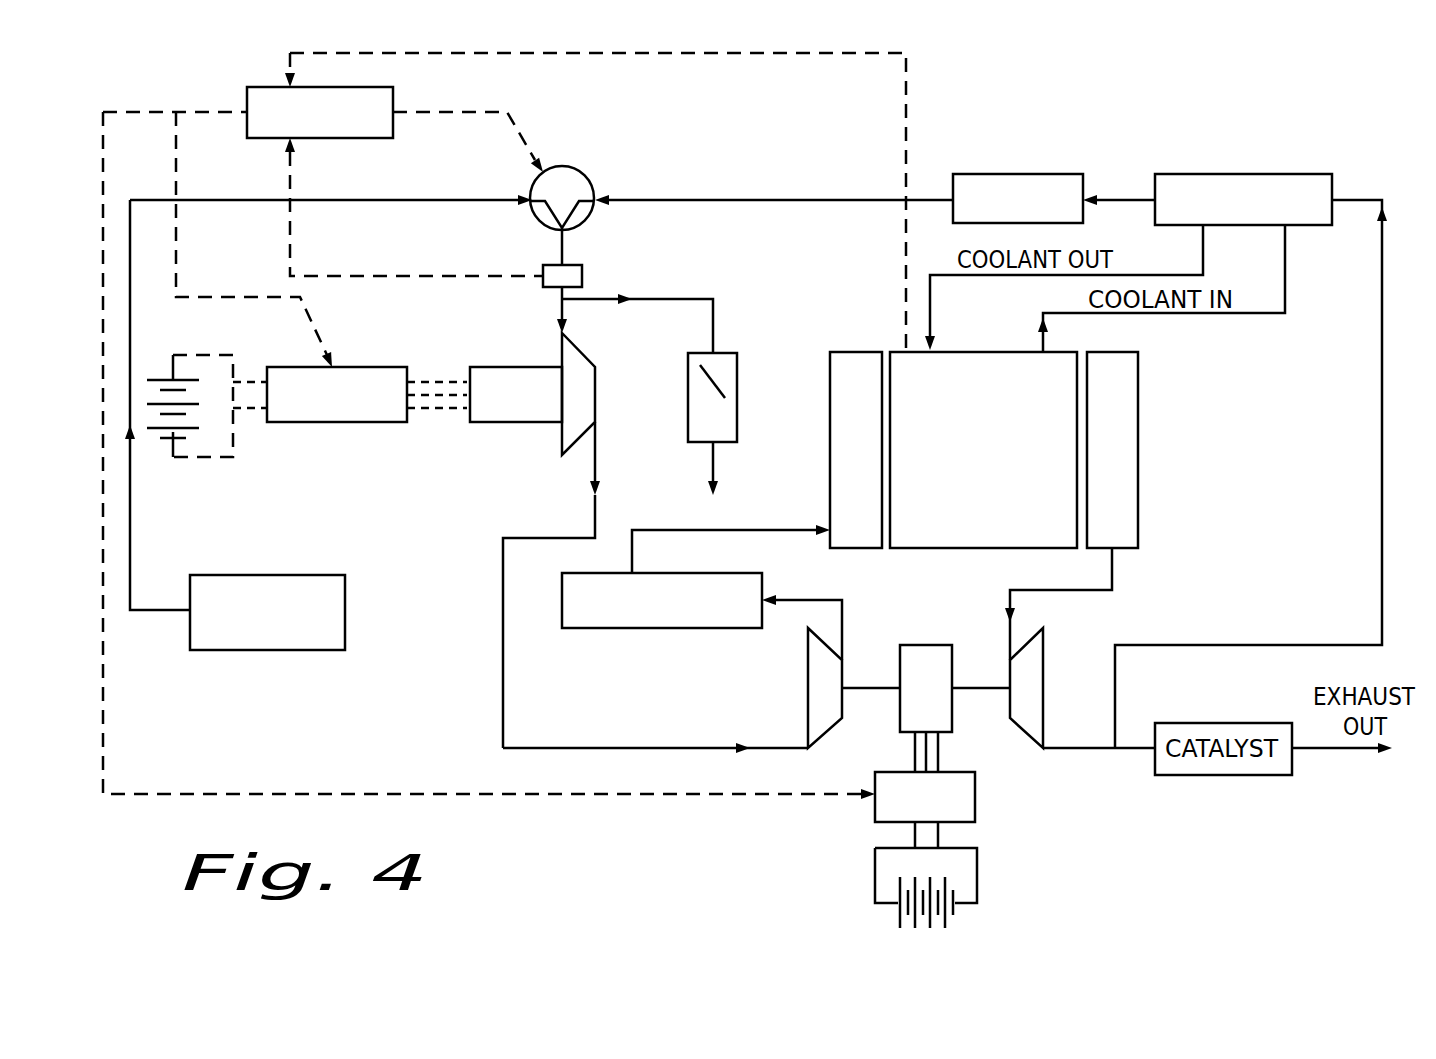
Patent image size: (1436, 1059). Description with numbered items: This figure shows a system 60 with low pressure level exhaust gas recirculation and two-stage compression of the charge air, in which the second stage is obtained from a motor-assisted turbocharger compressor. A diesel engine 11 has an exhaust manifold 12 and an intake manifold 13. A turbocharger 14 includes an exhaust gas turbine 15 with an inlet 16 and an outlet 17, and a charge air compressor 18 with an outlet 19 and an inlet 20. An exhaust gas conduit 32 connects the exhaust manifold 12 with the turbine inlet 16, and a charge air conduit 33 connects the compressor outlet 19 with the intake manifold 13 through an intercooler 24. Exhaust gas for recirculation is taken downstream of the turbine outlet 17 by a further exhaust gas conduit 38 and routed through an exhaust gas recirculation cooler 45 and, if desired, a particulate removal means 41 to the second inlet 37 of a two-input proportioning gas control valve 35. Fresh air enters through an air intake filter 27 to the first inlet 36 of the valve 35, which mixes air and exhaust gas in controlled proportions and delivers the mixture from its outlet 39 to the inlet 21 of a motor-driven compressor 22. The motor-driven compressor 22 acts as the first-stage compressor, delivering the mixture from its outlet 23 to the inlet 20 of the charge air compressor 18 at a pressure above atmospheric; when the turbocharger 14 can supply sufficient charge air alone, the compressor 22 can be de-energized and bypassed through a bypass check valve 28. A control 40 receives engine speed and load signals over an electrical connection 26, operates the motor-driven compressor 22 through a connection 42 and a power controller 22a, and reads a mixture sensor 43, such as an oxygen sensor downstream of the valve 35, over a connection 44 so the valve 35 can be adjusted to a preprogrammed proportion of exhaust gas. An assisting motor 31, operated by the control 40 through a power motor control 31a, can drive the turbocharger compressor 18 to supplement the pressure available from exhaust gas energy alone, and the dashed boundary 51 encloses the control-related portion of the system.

The diesel engine 11 is at (990, 352).
The exhaust manifold 12 is at (1138, 435).
The intake manifold 13 is at (830, 466).
The turbocharger 14 is at (1070, 644).
The exhaust gas turbine 15 is at (1043, 680).
The exhaust gas turbine inlet 16 is at (1010, 660).
The exhaust gas turbine outlet 17 is at (1043, 749).
The charge air compressor 18 is at (808, 690).
The charge air compressor outlet 19 is at (843, 660).
The charge air compressor inlet 20 is at (808, 750).
The motor-driven compressor inlet 21 is at (562, 334).
The motor-driven compressor 22 is at (562, 433).
The power controller 22a is at (330, 422).
The motor-driven compressor outlet 23 is at (596, 423).
The intercooler 24 is at (620, 628).
The electrical connection 26 is at (906, 60).
The air intake filter 27 is at (275, 650).
The bypass check valve 28 is at (737, 390).
The assisting motor 31 is at (926, 645).
The power motor control 31a is at (975, 799).
The exhaust gas conduit 32 is at (1112, 588).
The charge air conduit 33 is at (720, 531).
The two-input proportioning gas control valve 35 is at (584, 176).
The first inlet 36 is at (530, 210).
The second inlet 37 is at (597, 208).
The further exhaust gas conduit 38 is at (1382, 467).
The gas control valve outlet 39 is at (566, 232).
The control 40 is at (247, 103).
The particulate removal means 41 is at (1083, 175).
The connection 42 is at (218, 297).
The mixture sensor 43 is at (582, 279).
The connection 44 is at (340, 276).
The exhaust gas recirculation cooler 45 is at (1270, 174).
The control system boundary 51 is at (103, 700).
The system 60 is at (1357, 133).